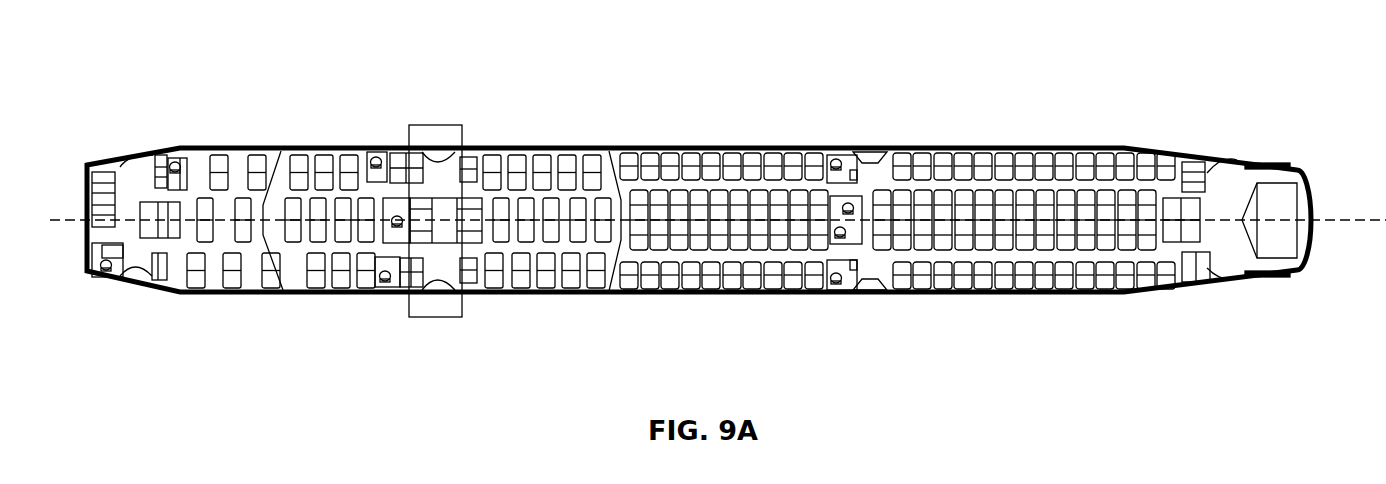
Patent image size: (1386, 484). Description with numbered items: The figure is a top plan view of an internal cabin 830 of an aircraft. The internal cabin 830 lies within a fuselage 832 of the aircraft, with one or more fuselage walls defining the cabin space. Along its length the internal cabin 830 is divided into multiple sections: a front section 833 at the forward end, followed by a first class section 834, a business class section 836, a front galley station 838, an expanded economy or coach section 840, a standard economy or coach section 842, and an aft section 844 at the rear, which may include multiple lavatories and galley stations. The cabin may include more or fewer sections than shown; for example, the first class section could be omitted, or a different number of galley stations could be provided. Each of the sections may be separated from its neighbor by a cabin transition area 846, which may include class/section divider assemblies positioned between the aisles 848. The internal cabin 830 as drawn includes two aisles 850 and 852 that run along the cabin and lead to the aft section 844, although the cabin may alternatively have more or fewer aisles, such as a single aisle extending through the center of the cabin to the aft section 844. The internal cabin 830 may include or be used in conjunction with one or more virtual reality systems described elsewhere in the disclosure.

The internal cabin 830 is at (229, 54).
The fuselage 832 is at (558, 112).
The front section 833 is at (150, 304).
The first class section 834 is at (242, 295).
The business class section 836 is at (315, 150).
The front galley station 838 is at (435, 311).
The expanded economy or coach section 840 is at (535, 295).
The standard economy or coach section 842 is at (665, 149).
The aft section 844 is at (1232, 175).
The cabin transition area 846 is at (160, 150).
The aisles 848 is at (423, 187).
The aisle 850 is at (1027, 187).
The aisle 852 is at (1043, 257).